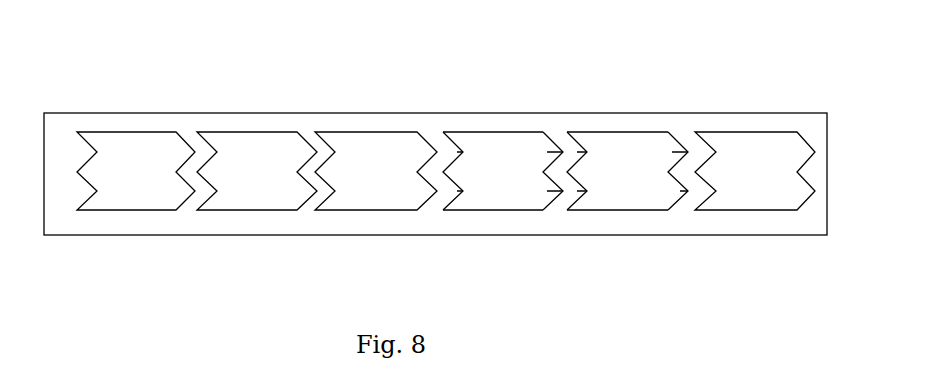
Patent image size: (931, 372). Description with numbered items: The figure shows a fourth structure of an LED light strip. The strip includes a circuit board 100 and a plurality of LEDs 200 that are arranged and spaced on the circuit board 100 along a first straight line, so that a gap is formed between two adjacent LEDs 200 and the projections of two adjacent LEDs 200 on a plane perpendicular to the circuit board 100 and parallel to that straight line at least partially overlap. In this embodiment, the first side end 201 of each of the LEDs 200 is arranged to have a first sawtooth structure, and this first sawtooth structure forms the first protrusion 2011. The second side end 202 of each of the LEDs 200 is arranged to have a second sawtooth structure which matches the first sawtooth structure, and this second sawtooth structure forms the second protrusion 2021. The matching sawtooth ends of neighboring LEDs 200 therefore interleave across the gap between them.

The circuit board 100 is at (635, 112).
The LED 200 is at (755, 170).
The first side end 201 is at (457, 157).
The second side end 202 is at (548, 157).
The first protrusion 2011 is at (457, 170).
The second protrusion 2021 is at (547, 190).